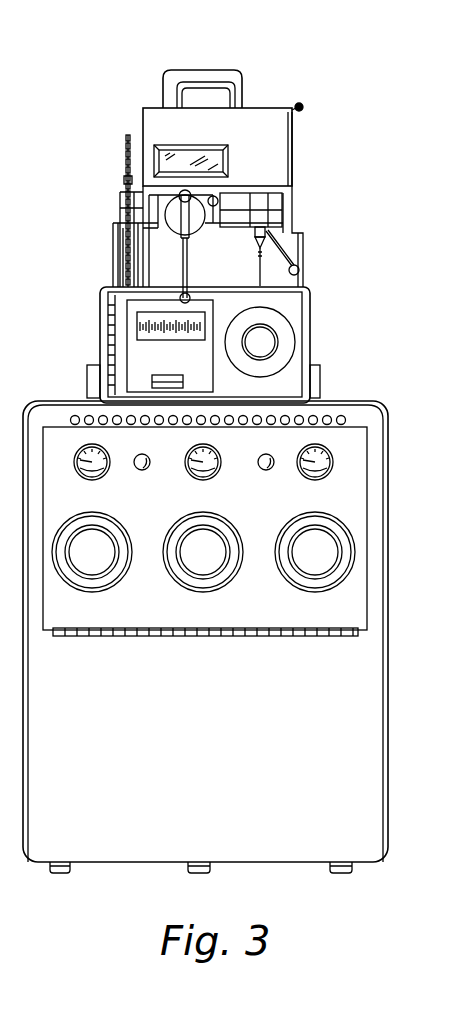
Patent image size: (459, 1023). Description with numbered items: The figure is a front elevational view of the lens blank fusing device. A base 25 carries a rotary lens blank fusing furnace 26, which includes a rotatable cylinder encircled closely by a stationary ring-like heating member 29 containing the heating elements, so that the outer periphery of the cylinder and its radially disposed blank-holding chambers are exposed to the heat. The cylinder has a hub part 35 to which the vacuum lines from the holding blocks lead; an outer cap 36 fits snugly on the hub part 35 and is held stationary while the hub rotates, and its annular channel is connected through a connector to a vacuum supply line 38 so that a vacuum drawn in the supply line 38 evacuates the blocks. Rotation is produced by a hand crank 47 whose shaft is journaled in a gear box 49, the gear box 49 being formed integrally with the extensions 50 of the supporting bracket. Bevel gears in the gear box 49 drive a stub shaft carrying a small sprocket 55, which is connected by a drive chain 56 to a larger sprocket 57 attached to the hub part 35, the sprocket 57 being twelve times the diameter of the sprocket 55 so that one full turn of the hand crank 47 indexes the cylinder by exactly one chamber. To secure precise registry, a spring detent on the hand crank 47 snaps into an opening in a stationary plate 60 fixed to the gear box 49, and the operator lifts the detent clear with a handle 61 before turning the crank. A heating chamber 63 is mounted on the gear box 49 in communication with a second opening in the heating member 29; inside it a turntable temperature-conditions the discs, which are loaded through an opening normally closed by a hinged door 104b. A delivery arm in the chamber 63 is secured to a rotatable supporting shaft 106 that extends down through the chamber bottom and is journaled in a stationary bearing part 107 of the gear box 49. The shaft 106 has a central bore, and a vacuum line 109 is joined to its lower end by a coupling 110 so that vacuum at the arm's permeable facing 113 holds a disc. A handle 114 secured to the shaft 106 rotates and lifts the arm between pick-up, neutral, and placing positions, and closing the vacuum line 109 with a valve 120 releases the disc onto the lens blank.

The base 25 is at (372, 652).
The rotary lens blank fusing furnace 26 is at (293, 82).
The heating member 29 is at (228, 70).
The hub part 35 is at (138, 192).
The outer cap 36 is at (120, 208).
The vacuum supply line 38 is at (113, 270).
The hand crank 47 is at (190, 268).
The gear box 49 is at (162, 218).
The extensions 50 is at (145, 278).
The sprocket 55 is at (116, 222).
The drive chain 56 is at (125, 140).
The sprocket 57 is at (124, 180).
The stationary plate 60 is at (172, 226).
The handle 61 is at (191, 194).
The heating chamber 63 is at (278, 136).
The hinged door 104b is at (296, 160).
The rotatable supporting shaft 106 is at (267, 230).
The stationary bearing part 107 is at (274, 219).
The vacuum line 109 is at (263, 254).
The coupling 110 is at (258, 250).
The permeable facing 113 is at (271, 270).
The handle 114 is at (285, 258).
The valve 120 is at (266, 288).